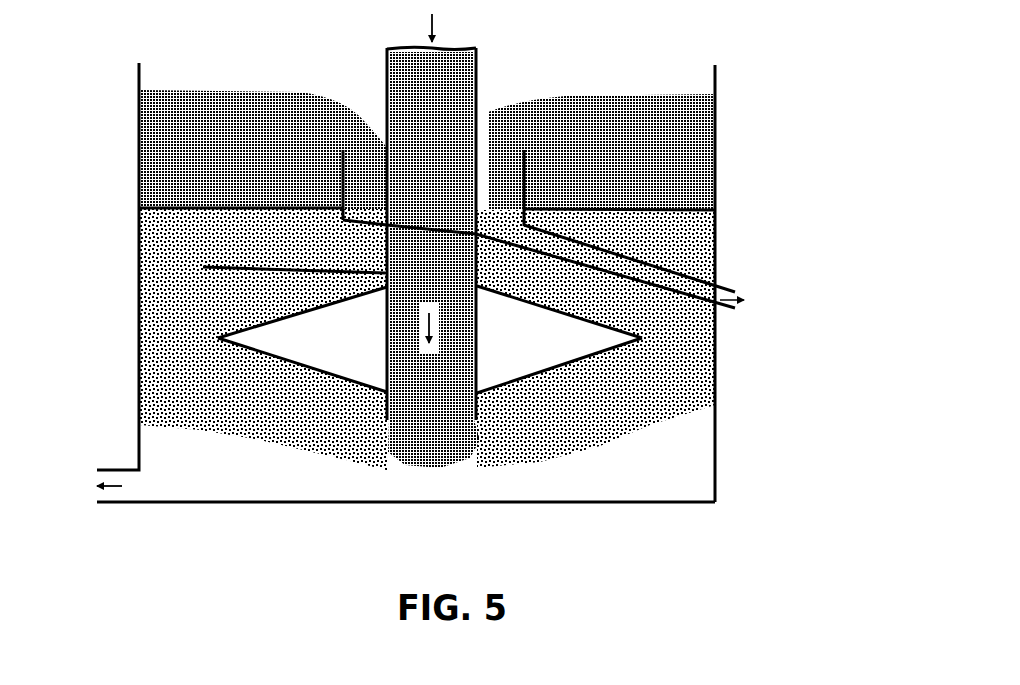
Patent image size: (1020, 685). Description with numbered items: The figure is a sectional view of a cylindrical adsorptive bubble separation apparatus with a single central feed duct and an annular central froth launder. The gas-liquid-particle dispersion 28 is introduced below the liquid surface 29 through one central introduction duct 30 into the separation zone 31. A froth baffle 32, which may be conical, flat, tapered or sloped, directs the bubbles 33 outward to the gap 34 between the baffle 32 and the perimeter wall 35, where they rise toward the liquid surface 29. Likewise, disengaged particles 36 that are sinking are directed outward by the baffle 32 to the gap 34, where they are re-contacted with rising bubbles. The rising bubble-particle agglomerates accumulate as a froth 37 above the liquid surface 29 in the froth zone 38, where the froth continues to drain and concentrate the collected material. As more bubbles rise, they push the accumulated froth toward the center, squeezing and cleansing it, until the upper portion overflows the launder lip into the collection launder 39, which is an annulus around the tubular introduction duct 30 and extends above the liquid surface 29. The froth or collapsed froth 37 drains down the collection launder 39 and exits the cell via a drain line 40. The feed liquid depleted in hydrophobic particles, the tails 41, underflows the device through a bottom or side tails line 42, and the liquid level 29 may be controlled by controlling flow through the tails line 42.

The gas-liquid-particle dispersion 28 is at (427, 433).
The liquid surface 29 is at (139, 208).
The central introduction duct 30 is at (477, 78).
The separation zone 31 is at (218, 390).
The froth baffle 32 is at (577, 365).
The bubbles 33 is at (327, 390).
The gap 34 is at (180, 338).
The perimeter wall 35 is at (139, 285).
The disengaged particles 36 is at (203, 267).
The froth 37 is at (290, 96).
The froth zone 38 is at (643, 152).
The collection launder 39 is at (540, 130).
The drain line 40 is at (673, 275).
The tails 41 is at (128, 485).
The tails line 42 is at (120, 503).